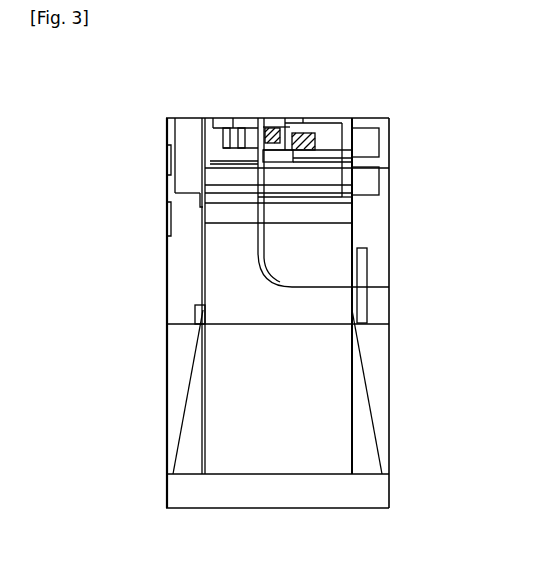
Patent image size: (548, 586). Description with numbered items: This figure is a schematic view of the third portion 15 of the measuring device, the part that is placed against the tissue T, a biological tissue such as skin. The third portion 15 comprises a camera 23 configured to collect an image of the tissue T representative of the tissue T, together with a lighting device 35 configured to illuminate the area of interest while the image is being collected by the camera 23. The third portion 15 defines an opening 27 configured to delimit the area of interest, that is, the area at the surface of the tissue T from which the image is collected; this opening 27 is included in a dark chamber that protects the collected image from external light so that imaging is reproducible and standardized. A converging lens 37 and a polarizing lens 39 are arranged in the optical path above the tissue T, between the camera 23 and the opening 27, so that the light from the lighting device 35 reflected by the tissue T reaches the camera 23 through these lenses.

The third portion 15 is at (132, 185).
The camera 23 is at (273, 128).
The converging lens 37 is at (332, 180).
The polarizing lens 39 is at (338, 216).
The lighting device 35 is at (343, 292).
The opening 27 is at (228, 393).
The tissue T is at (380, 484).